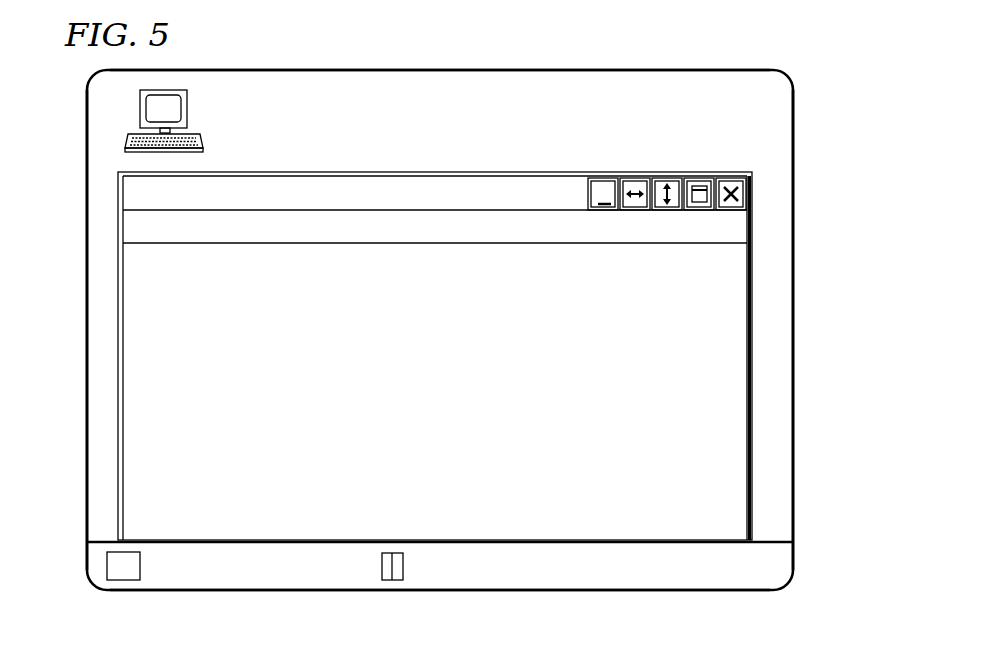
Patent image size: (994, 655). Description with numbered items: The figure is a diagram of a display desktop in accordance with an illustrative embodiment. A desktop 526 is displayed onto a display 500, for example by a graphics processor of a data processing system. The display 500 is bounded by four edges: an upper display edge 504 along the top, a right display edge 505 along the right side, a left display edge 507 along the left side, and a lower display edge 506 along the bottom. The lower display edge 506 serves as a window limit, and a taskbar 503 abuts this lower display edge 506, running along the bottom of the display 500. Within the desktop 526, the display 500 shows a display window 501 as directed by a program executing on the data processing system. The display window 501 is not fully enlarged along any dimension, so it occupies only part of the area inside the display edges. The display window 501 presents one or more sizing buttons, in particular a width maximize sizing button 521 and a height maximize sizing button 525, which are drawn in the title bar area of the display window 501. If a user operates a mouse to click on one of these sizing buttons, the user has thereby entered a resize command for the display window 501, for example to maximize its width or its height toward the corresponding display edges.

The display 500 is at (275, 62).
The display window 501 is at (349, 164).
The taskbar 503 is at (610, 590).
The upper display edge 504 is at (646, 70).
The right display edge 505 is at (795, 218).
The lower display edge 506 is at (338, 590).
The left display edge 507 is at (85, 410).
The width maximize sizing button 521 is at (630, 178).
The height maximize sizing button 525 is at (672, 178).
The desktop 526 is at (458, 134).